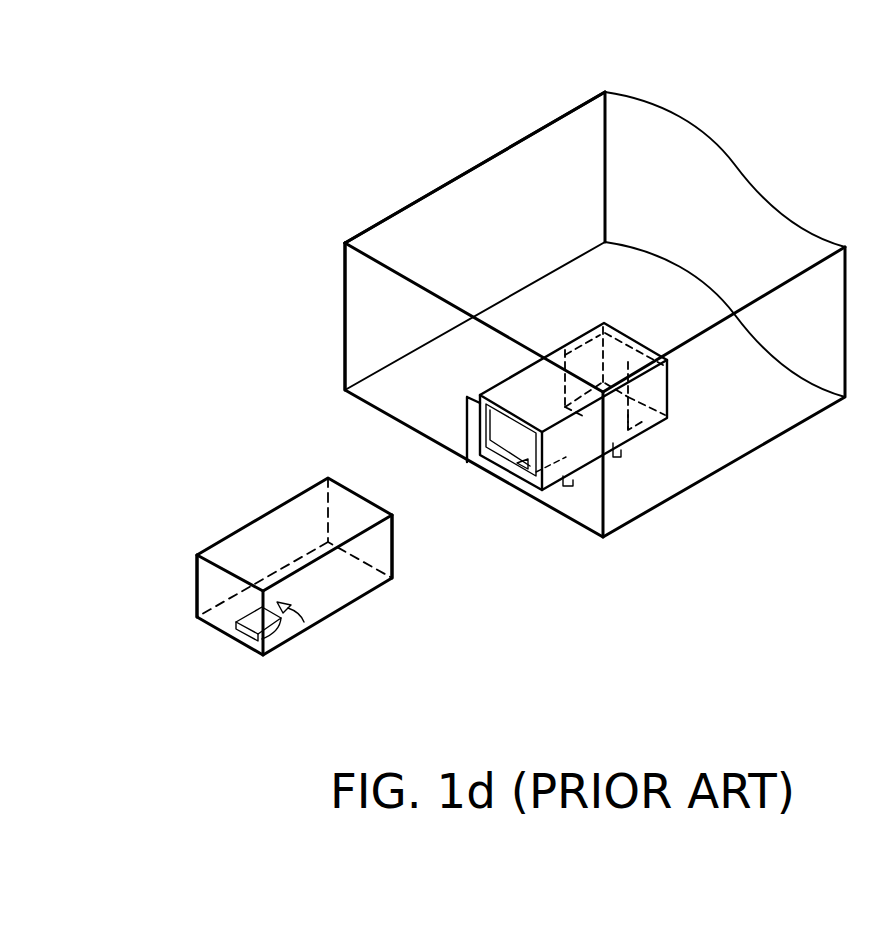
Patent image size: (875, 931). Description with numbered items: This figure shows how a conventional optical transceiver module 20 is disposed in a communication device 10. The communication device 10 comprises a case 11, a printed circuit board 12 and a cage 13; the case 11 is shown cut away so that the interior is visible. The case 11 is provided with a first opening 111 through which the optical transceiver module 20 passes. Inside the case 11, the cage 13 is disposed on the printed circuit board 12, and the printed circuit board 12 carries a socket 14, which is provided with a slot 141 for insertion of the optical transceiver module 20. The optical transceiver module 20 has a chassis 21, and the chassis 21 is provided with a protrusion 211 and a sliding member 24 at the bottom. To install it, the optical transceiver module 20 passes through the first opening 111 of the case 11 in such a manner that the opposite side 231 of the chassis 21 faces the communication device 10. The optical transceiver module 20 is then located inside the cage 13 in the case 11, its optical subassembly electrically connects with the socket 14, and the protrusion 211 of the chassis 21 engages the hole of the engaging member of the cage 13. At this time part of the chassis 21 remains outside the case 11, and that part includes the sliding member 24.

The communication device 10 is at (522, 118).
The case 11 is at (430, 227).
The printed circuit board 12 is at (410, 370).
The cage 13 is at (576, 351).
The socket 14 is at (593, 352).
The slot 141 is at (630, 432).
The first opening 111 is at (474, 432).
The optical transceiver module 20 is at (288, 540).
The chassis 21 is at (213, 585).
The protrusion 211 is at (307, 622).
The opposite side 231 is at (395, 550).
The sliding member 24 is at (233, 633).